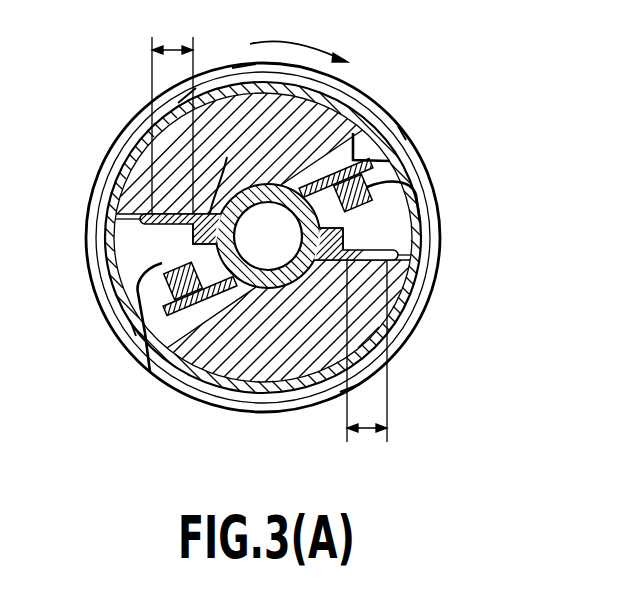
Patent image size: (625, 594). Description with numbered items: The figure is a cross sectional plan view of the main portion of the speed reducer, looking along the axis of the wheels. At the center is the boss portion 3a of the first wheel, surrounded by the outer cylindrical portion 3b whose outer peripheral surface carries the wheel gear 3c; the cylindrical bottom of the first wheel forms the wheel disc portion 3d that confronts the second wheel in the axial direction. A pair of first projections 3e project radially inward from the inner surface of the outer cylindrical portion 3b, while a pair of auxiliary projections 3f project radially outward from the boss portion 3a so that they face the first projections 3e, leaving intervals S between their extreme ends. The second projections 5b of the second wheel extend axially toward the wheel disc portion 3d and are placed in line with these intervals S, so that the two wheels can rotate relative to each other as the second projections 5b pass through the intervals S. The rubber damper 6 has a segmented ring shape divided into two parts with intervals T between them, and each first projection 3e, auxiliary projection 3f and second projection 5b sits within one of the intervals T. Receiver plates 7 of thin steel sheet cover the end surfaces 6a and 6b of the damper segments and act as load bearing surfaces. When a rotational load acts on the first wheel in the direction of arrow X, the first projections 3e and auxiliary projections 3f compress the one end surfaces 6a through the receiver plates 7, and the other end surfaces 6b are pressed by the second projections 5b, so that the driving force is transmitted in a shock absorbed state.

The boss portion 3a is at (176, 279).
The outer cylindrical portion 3b is at (307, 394).
The wheel gear 3c is at (205, 388).
The wheel disc portion 3d is at (400, 247).
The first projections 3e is at (192, 234).
The auxiliary projections 3f is at (146, 213).
The second projections 5b is at (163, 305).
The rubber damper 6 is at (200, 392).
The one end surfaces 6a is at (227, 157).
The other end surfaces 6b is at (353, 133).
The receiver plates 7 is at (130, 174).
The intervals S is at (172, 46).
The intervals T is at (161, 258).
The arrow X is at (299, 38).